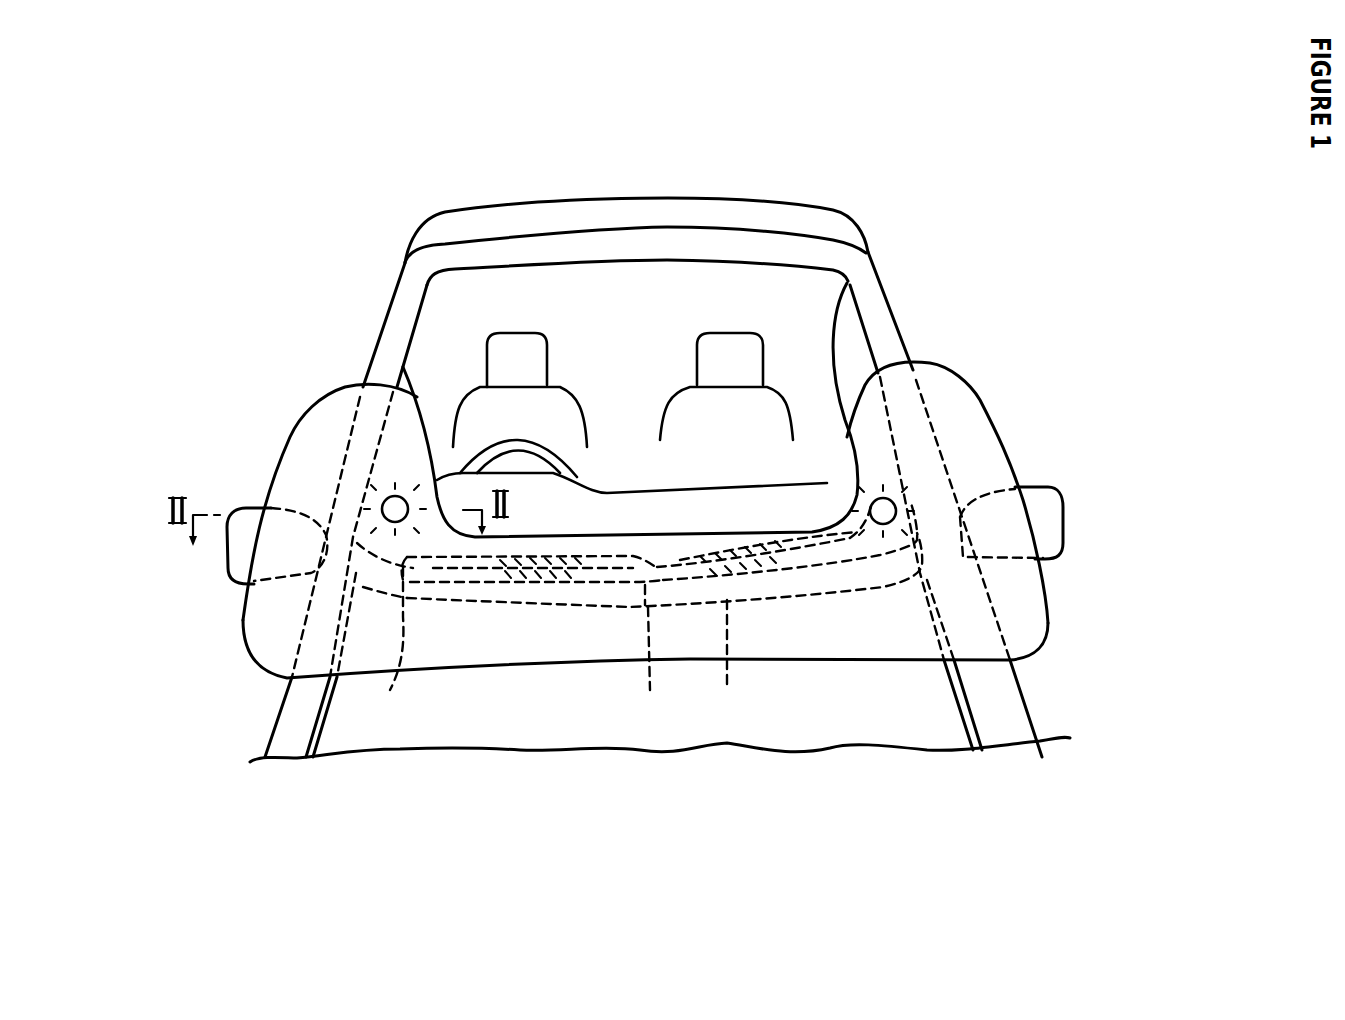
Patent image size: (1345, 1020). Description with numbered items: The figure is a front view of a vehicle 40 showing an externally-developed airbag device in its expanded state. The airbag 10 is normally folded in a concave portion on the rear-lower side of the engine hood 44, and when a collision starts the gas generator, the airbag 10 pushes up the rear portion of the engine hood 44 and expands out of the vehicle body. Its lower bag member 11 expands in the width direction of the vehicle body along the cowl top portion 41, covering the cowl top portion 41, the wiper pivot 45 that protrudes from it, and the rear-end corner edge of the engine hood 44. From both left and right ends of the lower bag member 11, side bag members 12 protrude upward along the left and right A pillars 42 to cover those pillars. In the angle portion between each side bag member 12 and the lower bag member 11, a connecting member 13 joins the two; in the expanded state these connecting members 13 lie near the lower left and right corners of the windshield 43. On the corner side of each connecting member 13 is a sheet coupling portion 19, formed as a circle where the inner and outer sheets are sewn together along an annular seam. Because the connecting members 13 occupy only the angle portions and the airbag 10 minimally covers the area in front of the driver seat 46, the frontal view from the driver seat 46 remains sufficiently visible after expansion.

The airbag 10 is at (458, 686).
The lower bag member 11 is at (593, 640).
The side bag member 12 is at (313, 430).
The connecting member 13 is at (397, 370).
The sheet coupling portion 19 is at (381, 506).
The vehicle 40 is at (803, 212).
The cowl top portion 41 is at (664, 632).
The A pillar 42 is at (402, 303).
The windshield 43 is at (680, 283).
The engine hood 44 is at (897, 737).
The wiper pivot 45 is at (636, 618).
The driver seat 46 is at (535, 343).